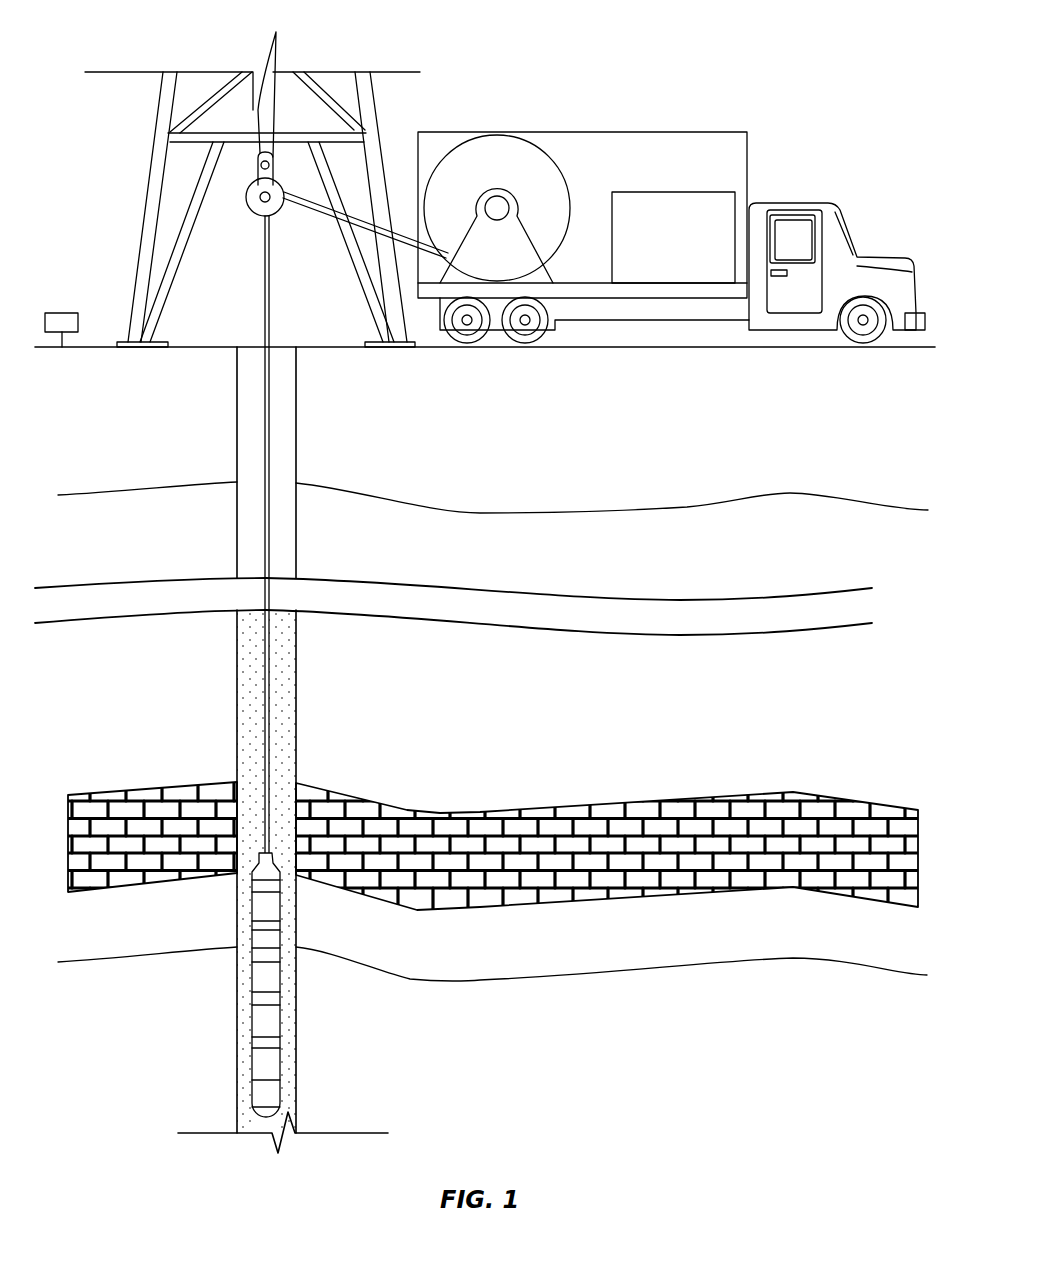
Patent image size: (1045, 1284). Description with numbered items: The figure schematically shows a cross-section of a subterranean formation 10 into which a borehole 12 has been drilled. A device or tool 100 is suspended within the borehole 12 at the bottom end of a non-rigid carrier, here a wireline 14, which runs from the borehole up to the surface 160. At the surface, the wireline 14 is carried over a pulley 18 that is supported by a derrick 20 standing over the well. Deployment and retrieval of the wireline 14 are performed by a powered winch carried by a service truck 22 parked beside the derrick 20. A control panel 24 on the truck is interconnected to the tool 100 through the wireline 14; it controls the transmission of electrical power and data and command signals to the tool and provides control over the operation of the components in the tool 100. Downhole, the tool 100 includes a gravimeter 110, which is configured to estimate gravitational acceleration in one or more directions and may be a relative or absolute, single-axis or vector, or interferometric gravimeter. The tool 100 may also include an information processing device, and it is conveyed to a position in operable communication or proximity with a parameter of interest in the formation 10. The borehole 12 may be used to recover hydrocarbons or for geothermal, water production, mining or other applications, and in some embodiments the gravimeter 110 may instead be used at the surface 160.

The subterranean formation 10 is at (608, 568).
The borehole 12 is at (237, 540).
The wireline 14 is at (270, 545).
The pulley 18 is at (246, 198).
The derrick 20 is at (153, 135).
The service truck 22 is at (616, 132).
The control panel 24 is at (668, 192).
The tool 100 is at (267, 1019).
The gravimeter 110 is at (267, 1065).
The surface 160 is at (78, 348).